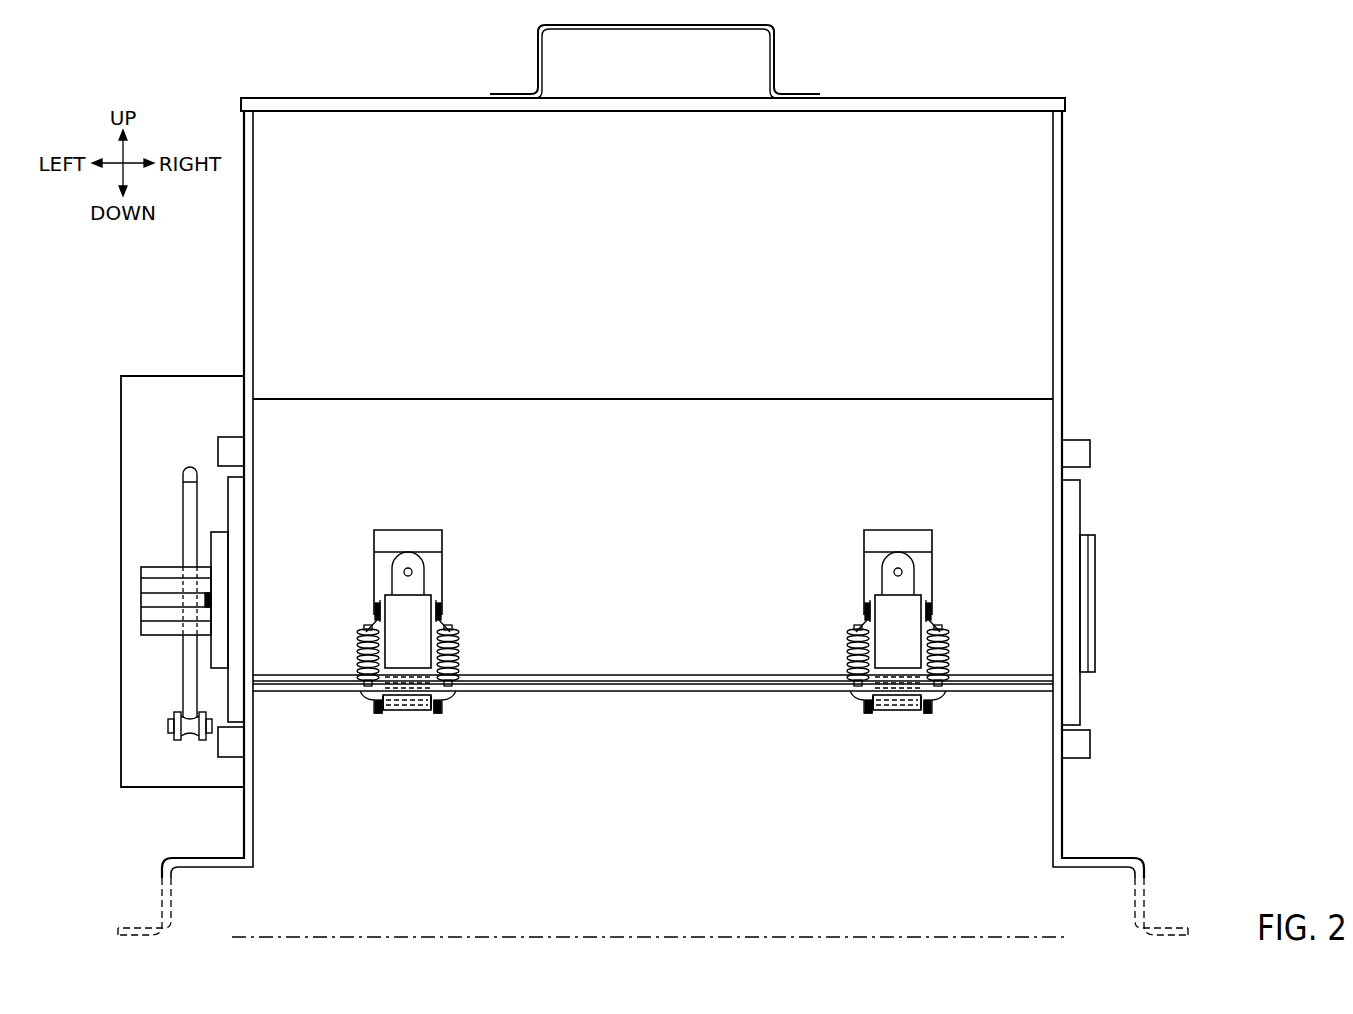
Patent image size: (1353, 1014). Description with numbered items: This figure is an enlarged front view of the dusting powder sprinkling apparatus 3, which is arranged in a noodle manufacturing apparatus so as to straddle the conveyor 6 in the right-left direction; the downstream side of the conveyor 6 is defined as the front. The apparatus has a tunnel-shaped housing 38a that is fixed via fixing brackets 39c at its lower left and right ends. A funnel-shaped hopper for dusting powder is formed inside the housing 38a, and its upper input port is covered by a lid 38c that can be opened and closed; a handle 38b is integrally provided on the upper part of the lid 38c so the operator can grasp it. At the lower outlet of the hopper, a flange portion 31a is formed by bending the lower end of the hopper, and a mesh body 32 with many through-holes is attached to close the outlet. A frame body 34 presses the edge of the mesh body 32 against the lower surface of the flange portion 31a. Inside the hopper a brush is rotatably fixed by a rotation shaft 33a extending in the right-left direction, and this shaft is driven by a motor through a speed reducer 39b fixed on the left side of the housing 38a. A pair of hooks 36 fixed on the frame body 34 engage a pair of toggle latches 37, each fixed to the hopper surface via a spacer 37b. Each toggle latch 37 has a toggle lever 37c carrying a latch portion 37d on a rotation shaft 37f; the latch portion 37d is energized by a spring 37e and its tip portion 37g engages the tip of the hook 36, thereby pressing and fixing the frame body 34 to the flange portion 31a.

The dusting powder sprinkling apparatus 3 is at (900, 76).
The conveyor 6 is at (568, 937).
The flange portion 31a is at (691, 682).
The mesh body 32 is at (630, 675).
The rotation shaft 33a is at (167, 578).
The frame body 34 is at (660, 692).
The hook 36 is at (412, 703).
The toggle latch 37 is at (460, 549).
The spacer 37b is at (408, 530).
The toggle lever 37c is at (397, 566).
The latch portion 37d is at (363, 700).
The spring 37e is at (357, 648).
The rotation shaft 37f is at (378, 608).
The tip portion 37g is at (375, 712).
The housing 38a is at (1064, 183).
The handle 38b is at (775, 53).
The lid 38c is at (344, 98).
The speed reducer 39b is at (183, 503).
The fixing bracket 39c is at (160, 902).